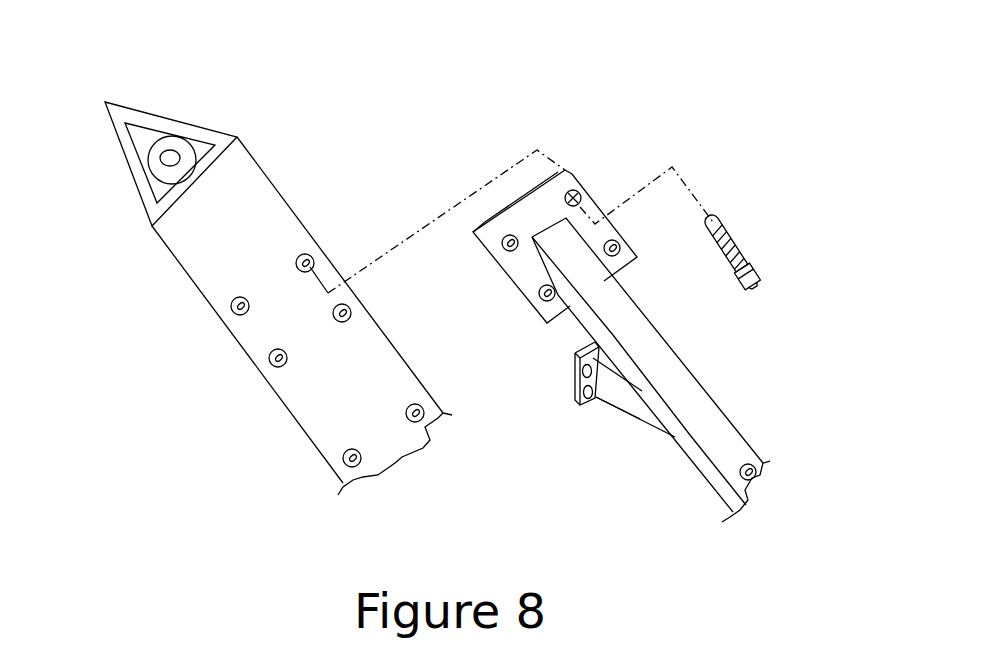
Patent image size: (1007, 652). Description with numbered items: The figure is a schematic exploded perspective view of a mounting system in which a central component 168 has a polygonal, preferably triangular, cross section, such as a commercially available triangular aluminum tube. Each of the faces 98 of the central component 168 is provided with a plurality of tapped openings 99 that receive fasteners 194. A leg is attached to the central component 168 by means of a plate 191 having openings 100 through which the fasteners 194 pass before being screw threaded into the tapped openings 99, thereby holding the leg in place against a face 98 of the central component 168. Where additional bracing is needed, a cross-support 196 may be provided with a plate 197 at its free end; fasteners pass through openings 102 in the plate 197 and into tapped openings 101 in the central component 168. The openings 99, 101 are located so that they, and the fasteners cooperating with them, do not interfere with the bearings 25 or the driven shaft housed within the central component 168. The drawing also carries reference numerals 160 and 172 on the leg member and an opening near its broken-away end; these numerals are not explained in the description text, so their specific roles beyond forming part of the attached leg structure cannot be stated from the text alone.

The bearing 25 is at (183, 142).
The face 98 is at (142, 110).
The tapped openings 99 is at (240, 296).
The openings 100 is at (581, 190).
The tapped openings 101 is at (423, 430).
The openings 102 is at (585, 372).
The frame member 160 is at (689, 374).
The central component 168 is at (355, 170).
The hole 172 is at (757, 462).
The plate 191 is at (543, 202).
The fastener 194 is at (748, 230).
The cross-support 196 is at (643, 418).
The plate 197 is at (611, 399).